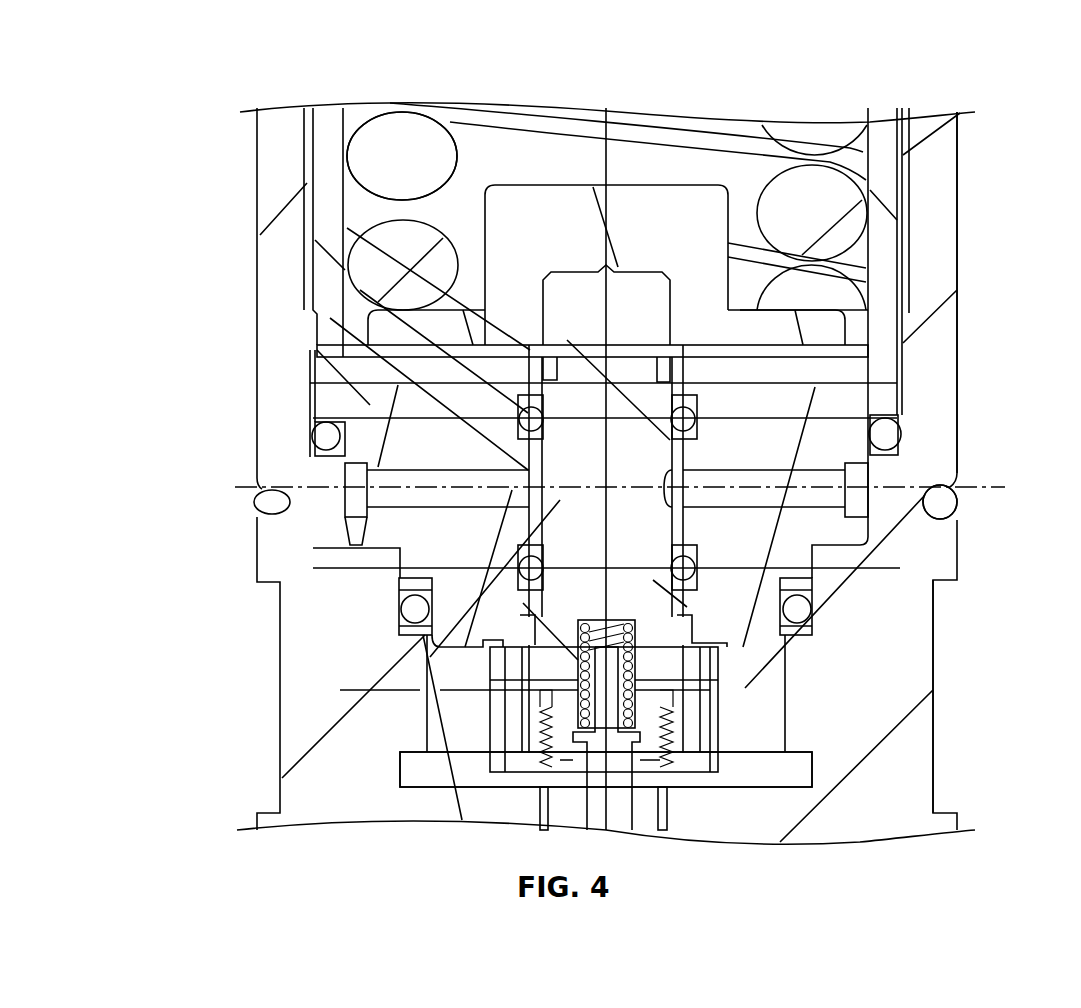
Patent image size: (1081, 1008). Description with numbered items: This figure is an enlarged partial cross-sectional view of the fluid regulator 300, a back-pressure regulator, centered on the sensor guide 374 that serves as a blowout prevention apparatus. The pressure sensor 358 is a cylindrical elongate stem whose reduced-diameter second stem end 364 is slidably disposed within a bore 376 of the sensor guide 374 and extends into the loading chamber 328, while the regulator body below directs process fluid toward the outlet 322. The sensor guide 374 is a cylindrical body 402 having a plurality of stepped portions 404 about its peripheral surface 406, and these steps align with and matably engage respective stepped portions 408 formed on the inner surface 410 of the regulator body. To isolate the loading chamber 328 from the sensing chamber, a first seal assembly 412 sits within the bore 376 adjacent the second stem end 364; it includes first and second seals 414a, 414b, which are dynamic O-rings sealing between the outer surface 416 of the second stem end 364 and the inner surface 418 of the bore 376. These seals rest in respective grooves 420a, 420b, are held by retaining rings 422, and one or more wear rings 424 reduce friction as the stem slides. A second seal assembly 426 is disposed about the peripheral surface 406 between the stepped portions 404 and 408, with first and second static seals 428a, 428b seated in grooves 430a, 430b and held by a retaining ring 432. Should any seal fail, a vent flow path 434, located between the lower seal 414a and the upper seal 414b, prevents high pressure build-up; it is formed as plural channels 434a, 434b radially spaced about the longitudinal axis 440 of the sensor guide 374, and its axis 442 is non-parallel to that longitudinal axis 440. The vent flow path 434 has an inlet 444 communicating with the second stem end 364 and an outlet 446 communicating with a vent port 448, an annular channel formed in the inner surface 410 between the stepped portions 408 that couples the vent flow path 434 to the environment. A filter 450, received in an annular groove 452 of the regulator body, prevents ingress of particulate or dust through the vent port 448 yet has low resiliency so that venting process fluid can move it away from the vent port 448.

The fluid regulator 300 is at (912, 96).
The outlet 322 is at (413, 768).
The loading chamber 328 is at (358, 208).
The pressure sensor 358 is at (790, 735).
The second stem end 364 is at (655, 320).
The sensor guide 374 is at (368, 403).
The bore 376 is at (413, 767).
The cylindrical body 402 is at (310, 374).
The stepped portions 404 is at (318, 385).
The peripheral surface 406 is at (897, 402).
The stepped portions 408 is at (397, 548).
The inner surface 410 is at (908, 262).
The first seal assembly 412 is at (708, 610).
The first seal 414a is at (805, 605).
The second seal 414b is at (697, 415).
The outer surface 416 is at (500, 372).
The inner surface 418 is at (480, 340).
The groove 420a is at (698, 553).
The groove 420b is at (695, 405).
The retaining rings 422 is at (430, 293).
The wear ring 424 is at (478, 307).
The second seal assembly 426 is at (284, 425).
The first seal 428a is at (400, 590).
The second seal 428b is at (315, 452).
The groove 430a is at (410, 612).
The groove 430b is at (905, 440).
The retaining ring 432 is at (398, 578).
The vent flow path 434 is at (455, 520).
The vent flow path 434a is at (254, 505).
The vent flow path 434b is at (762, 508).
The longitudinal axis 440 is at (604, 152).
The axis 442 is at (987, 485).
The inlet 444 is at (670, 477).
The outlet 446 is at (342, 500).
The vent port 448 is at (903, 495).
The filter 450 is at (950, 500).
The annular groove 452 is at (268, 518).